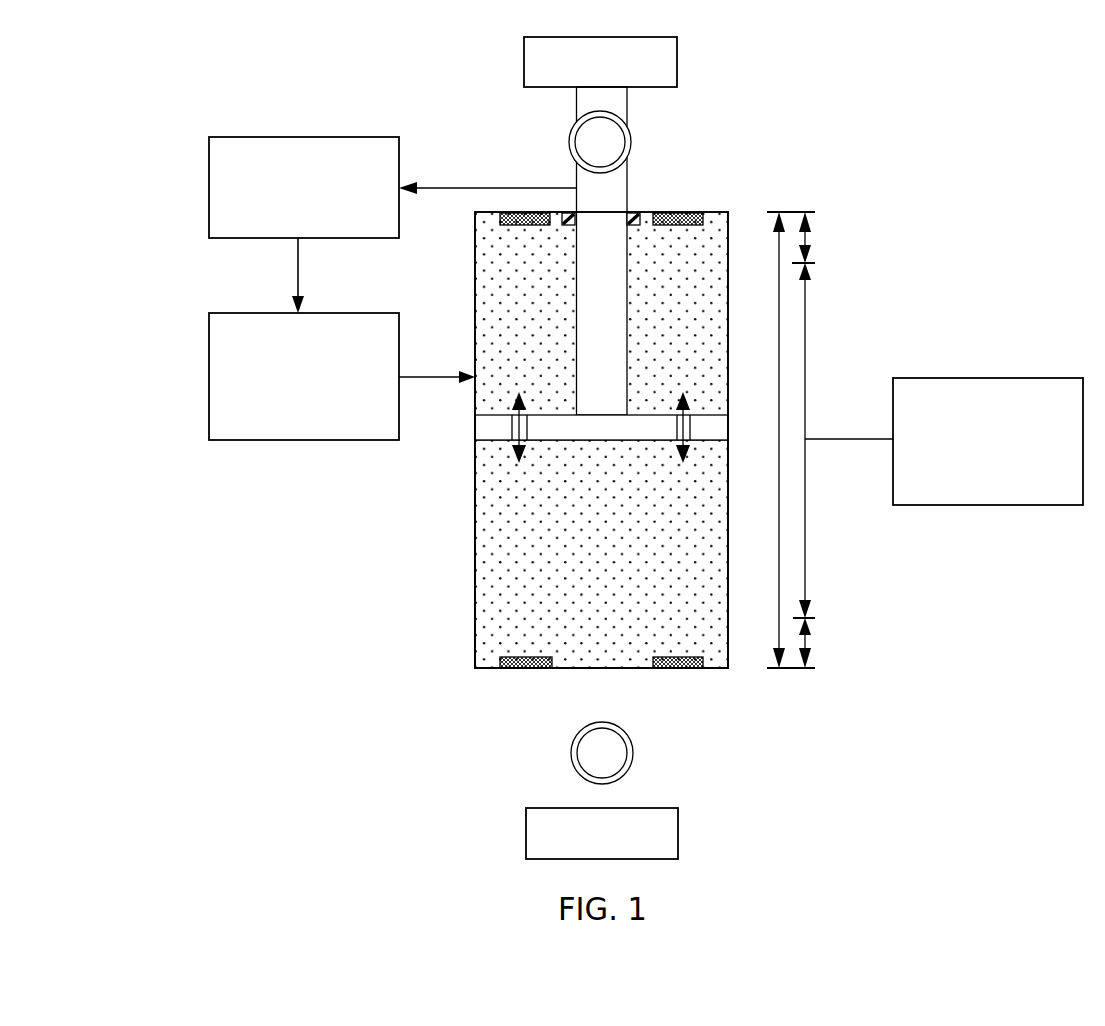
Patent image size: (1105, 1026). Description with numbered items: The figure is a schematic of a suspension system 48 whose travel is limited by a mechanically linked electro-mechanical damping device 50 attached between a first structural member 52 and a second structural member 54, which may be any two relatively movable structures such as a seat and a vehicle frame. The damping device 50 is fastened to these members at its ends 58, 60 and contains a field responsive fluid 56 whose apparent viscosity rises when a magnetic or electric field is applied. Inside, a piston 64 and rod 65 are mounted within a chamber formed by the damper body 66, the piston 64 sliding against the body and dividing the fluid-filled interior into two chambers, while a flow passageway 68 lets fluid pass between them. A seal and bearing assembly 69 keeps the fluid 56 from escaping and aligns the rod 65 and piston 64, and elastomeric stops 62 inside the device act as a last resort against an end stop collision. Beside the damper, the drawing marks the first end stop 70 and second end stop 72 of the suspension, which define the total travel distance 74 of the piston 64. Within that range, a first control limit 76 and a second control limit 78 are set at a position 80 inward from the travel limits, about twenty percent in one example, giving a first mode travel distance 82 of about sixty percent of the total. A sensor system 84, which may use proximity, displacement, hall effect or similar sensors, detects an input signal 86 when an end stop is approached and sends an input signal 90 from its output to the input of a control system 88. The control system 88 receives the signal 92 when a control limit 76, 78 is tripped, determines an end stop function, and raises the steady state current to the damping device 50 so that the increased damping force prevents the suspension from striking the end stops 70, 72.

The suspension system 48 is at (990, 378).
The electro-mechanical damping device 50 is at (440, 667).
The first structural member 52 is at (524, 63).
The second structural member 54 is at (526, 832).
The field responsive fluid 56 is at (478, 617).
The first end of damping device 58 is at (570, 143).
The second end of damping device 60 is at (571, 752).
The elastomeric stops 62 is at (678, 213).
The piston 64 is at (613, 438).
The rod 65 is at (613, 294).
The damper body 66 is at (475, 531).
The flow passageway 68 is at (690, 421).
The seal and bearing assembly 69 is at (635, 213).
The first end stop 70 is at (790, 212).
The second end stop 72 is at (808, 668).
The travel distance 74 is at (777, 447).
The first control limit 76 is at (808, 265).
The second control limit 78 is at (808, 618).
The control limit position 80 is at (808, 237).
The first mode travel distance 82 is at (808, 390).
The sensor system 84 is at (209, 183).
The input signal 86 is at (477, 187).
The control system 88 is at (209, 379).
The input signal to control system 90 is at (296, 274).
The signal 92 is at (430, 376).